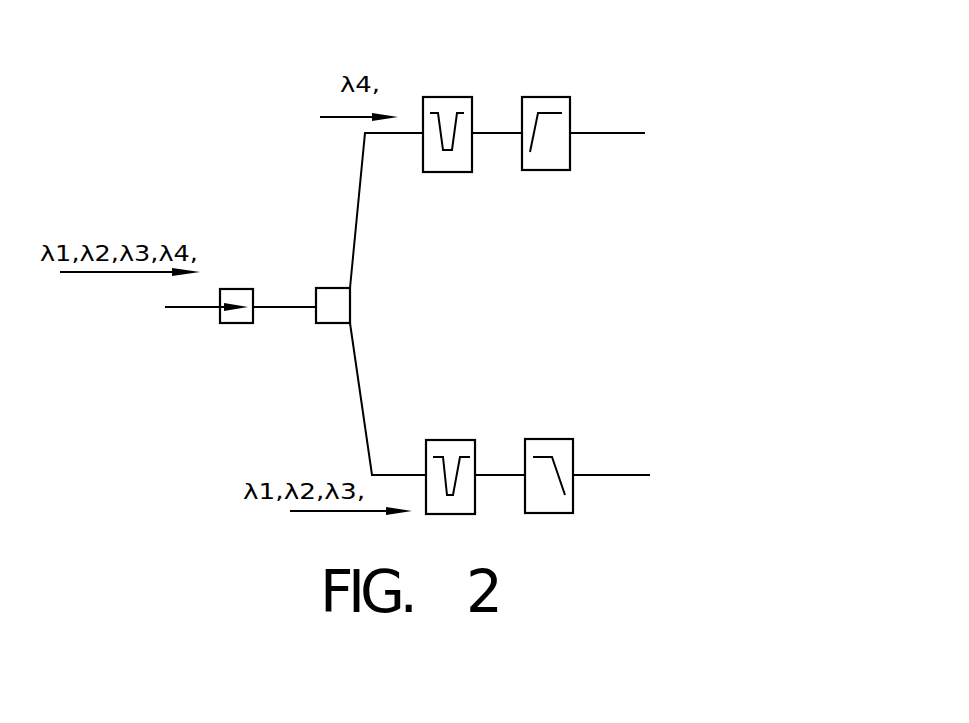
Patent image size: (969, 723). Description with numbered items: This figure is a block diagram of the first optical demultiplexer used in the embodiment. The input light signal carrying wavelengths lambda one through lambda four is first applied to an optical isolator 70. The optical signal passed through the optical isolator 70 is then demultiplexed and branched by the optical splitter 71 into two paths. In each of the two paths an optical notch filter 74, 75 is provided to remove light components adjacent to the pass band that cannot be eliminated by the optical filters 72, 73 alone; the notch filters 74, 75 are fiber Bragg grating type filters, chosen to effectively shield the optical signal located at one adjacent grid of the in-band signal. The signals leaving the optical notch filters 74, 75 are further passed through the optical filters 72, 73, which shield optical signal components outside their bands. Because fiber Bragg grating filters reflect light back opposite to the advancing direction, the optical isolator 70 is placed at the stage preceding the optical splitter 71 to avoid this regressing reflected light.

The optical isolator 70 is at (237, 289).
The optical splitter 71 is at (335, 305).
The optical filter 72 is at (543, 97).
The optical filter 73 is at (538, 439).
The optical notch filter 74 is at (447, 97).
The optical notch filter 75 is at (455, 440).